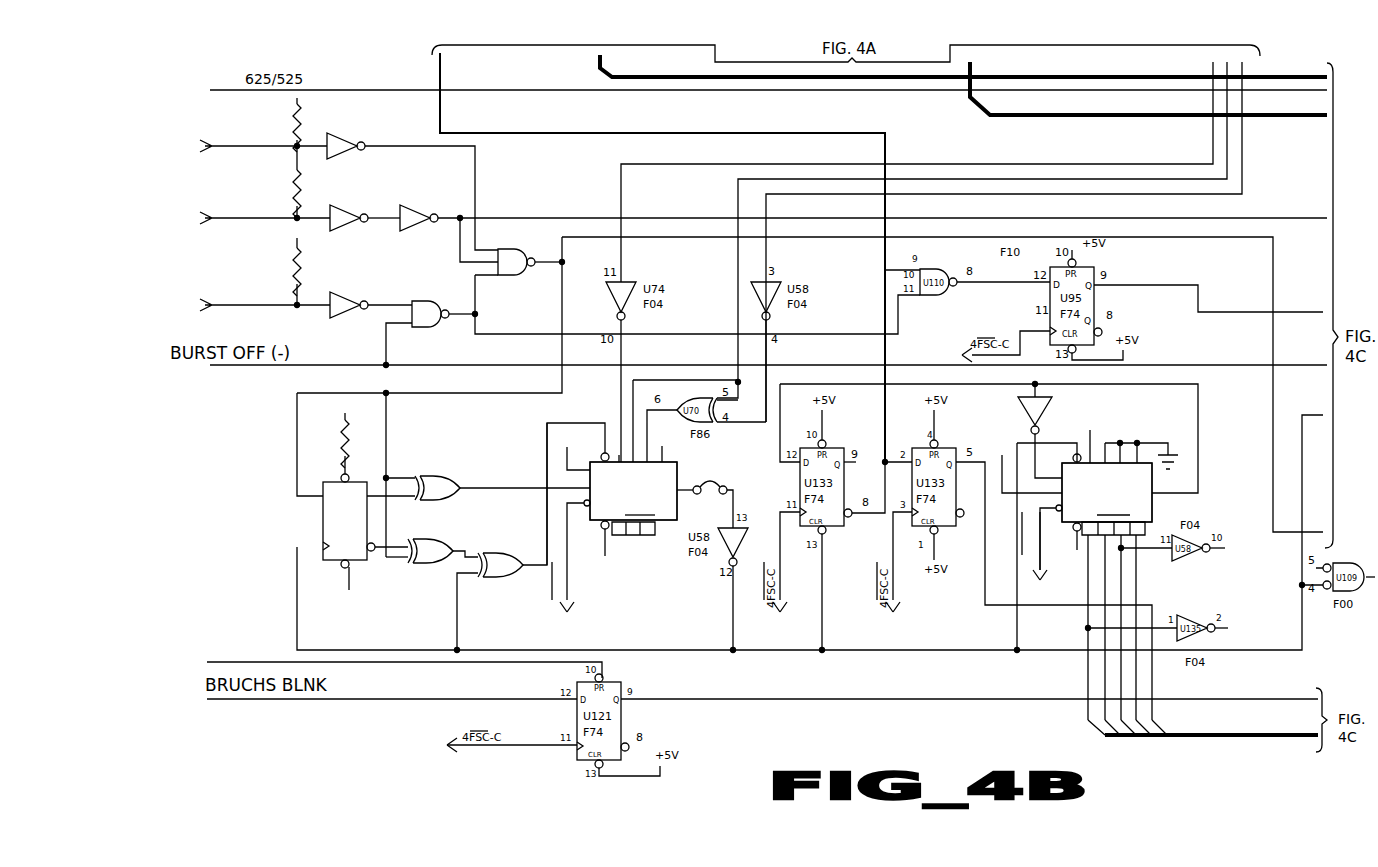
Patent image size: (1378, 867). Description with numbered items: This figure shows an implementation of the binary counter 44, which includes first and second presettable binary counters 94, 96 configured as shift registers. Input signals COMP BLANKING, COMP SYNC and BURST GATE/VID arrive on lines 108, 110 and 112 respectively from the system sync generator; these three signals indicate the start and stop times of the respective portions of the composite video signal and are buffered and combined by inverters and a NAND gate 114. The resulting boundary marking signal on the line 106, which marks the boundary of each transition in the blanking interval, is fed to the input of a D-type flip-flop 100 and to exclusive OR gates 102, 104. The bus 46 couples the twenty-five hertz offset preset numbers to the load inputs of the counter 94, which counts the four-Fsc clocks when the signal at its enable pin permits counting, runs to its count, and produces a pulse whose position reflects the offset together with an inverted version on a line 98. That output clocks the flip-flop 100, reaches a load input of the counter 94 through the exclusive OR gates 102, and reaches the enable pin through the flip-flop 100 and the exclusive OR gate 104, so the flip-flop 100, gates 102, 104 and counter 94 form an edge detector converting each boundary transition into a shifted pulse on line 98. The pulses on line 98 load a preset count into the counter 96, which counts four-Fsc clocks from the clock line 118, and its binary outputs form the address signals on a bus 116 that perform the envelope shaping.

The line 108 is at (230, 148).
The line 110 is at (230, 220).
The line 112 is at (230, 307).
The NAND gate 114 is at (505, 278).
The line 106 is at (562, 348).
The bus 46 is at (1250, 147).
The exclusive OR gate 104 is at (433, 470).
The D-type flip-flop 100 is at (323, 518).
The exclusive OR gates 102 is at (448, 598).
The presettable binary counter 94 is at (680, 462).
The binary counter 44 is at (651, 555).
The presettable binary counter 96 is at (1152, 505).
The clock line 118 is at (1040, 578).
The line 98 is at (795, 655).
The bus 116 is at (1222, 735).